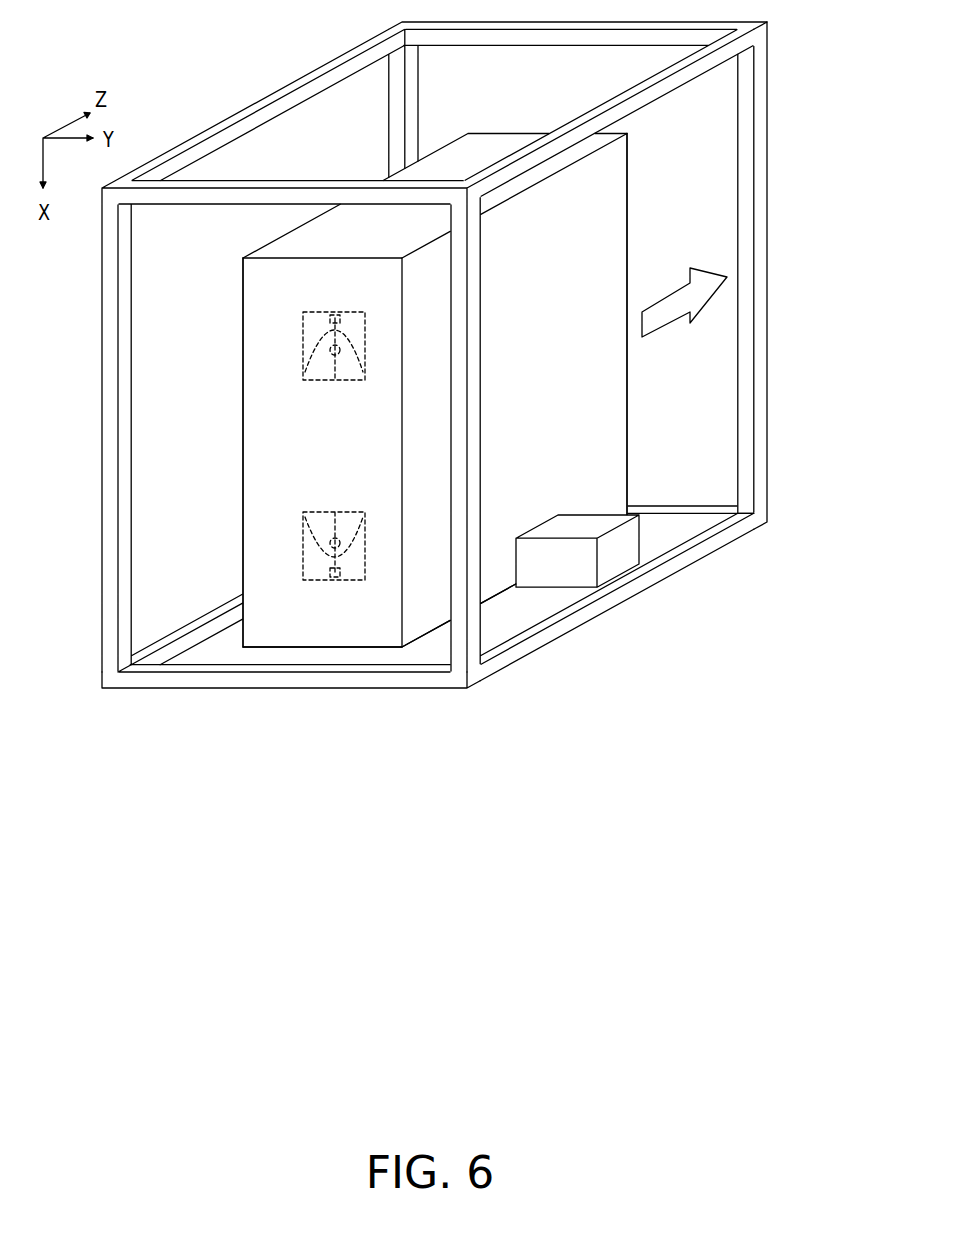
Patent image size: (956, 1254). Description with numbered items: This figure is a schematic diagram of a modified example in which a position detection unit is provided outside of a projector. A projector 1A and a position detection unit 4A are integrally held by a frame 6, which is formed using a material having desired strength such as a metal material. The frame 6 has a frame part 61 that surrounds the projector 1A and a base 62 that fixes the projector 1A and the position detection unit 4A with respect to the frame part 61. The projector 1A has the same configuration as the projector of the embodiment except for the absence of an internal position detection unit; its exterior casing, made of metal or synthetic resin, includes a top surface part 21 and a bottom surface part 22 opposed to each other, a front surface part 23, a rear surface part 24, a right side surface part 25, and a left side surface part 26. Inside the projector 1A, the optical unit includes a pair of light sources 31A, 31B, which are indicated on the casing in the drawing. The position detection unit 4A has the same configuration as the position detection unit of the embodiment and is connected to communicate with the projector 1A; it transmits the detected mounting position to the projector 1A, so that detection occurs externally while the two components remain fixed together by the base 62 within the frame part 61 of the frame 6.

The projector 1A is at (450, 383).
The position detection unit 4A is at (618, 558).
The frame 6 is at (768, 277).
The frame part 61 is at (762, 417).
The base 62 is at (360, 658).
The top surface part 21 is at (608, 422).
The bottom surface part 22 is at (241, 540).
The front surface part 23 is at (625, 450).
The rear surface part 24 is at (249, 394).
The right side surface part 25 is at (463, 148).
The left side surface part 26 is at (497, 596).
The light source 31A is at (331, 509).
The light source 31B is at (318, 382).